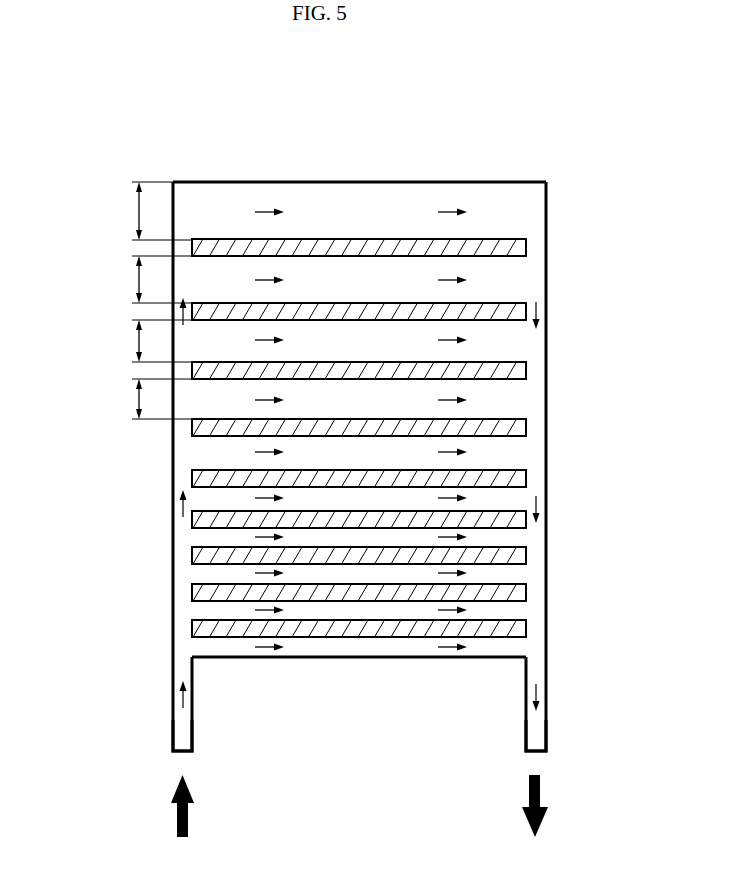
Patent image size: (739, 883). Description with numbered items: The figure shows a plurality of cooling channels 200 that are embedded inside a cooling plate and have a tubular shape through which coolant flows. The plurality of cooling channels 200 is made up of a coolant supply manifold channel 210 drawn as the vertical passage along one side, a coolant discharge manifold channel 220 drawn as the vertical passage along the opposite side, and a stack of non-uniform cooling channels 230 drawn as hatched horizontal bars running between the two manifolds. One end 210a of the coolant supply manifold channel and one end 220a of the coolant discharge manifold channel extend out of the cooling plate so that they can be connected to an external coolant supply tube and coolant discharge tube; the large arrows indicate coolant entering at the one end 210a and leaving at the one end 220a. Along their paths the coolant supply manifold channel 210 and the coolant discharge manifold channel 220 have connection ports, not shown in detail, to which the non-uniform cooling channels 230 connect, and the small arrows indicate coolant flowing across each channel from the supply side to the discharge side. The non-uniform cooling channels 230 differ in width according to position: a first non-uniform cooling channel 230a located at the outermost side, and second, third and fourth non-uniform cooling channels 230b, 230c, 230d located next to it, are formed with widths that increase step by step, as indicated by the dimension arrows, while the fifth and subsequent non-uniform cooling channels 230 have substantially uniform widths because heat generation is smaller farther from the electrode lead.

The plurality of cooling channels 200 is at (237, 115).
The coolant supply manifold channel 210 is at (182, 578).
The one end of the coolant supply manifold channel 210a is at (182, 738).
The coolant discharge manifold channel 220 is at (537, 578).
The one end of the coolant discharge manifold channel 220a is at (537, 739).
The non-uniform cooling channels 230 is at (72, 212).
The first non-uniform cooling channel 230a is at (111, 211).
The second non-uniform cooling channel 230b is at (111, 279).
The third non-uniform cooling channel 230c is at (111, 341).
The fourth non-uniform cooling channel 230d is at (111, 399).